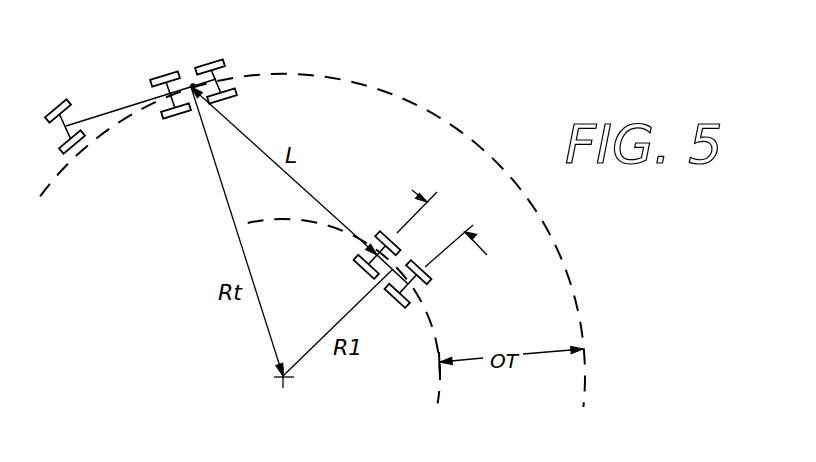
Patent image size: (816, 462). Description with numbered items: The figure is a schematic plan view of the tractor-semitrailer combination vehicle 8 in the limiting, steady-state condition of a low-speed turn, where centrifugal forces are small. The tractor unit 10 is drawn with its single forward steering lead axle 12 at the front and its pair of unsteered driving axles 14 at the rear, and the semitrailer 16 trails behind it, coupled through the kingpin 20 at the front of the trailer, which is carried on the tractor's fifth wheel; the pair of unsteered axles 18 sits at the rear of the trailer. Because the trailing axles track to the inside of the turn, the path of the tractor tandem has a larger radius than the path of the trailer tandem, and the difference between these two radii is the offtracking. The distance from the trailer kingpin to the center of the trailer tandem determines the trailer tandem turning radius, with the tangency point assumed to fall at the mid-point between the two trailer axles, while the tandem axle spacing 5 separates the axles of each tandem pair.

The tractor-semitrailer combination vehicle 8 is at (416, 97).
The tractor unit 10 is at (101, 110).
The forward steering lead axle 12 is at (51, 113).
The unsteered driving axles 14 is at (203, 61).
The semitrailer 16 is at (323, 207).
The unsteered axles 18 is at (429, 285).
The kingpin 20 is at (205, 84).
The tandem axle spacing 5 is at (442, 228).